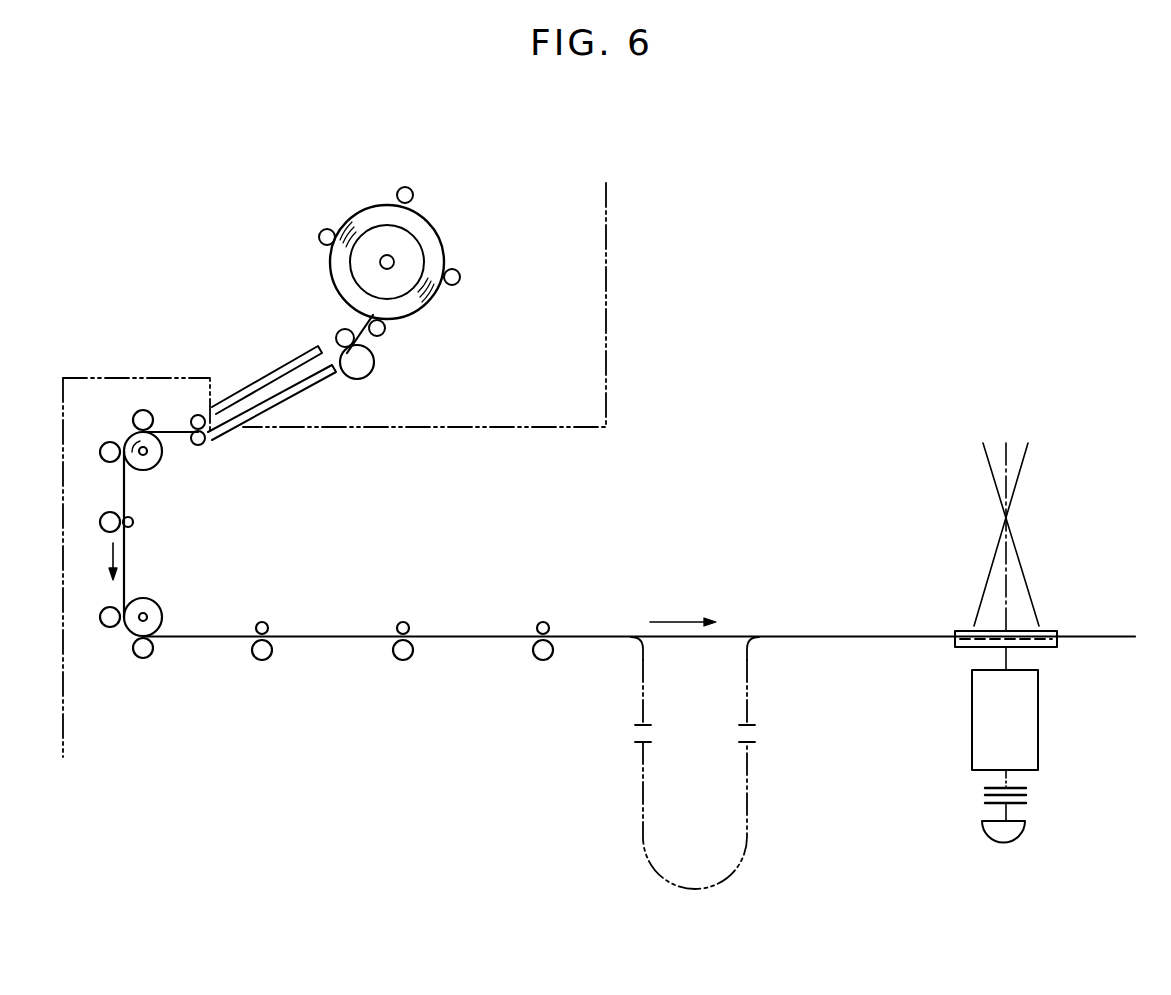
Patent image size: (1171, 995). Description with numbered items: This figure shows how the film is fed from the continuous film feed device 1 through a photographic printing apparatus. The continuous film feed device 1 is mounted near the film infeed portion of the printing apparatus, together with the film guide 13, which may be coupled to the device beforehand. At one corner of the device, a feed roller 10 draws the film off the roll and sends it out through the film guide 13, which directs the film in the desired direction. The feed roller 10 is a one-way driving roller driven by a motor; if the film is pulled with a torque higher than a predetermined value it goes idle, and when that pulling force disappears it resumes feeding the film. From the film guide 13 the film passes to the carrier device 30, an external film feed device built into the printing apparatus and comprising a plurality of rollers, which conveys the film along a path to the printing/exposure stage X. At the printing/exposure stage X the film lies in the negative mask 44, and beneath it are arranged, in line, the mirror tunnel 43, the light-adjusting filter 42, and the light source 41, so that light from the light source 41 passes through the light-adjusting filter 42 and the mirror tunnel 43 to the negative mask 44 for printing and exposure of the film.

The continuous film feed device 1 is at (346, 209).
The feed roller 10 is at (368, 365).
The film guide 13 is at (283, 364).
The carrier device 30 is at (165, 470).
The printing/exposure stage X is at (960, 606).
The negative mask 44 is at (1048, 649).
The mirror tunnel 43 is at (1034, 738).
The light-adjusting filter 42 is at (982, 794).
The light source 41 is at (987, 829).